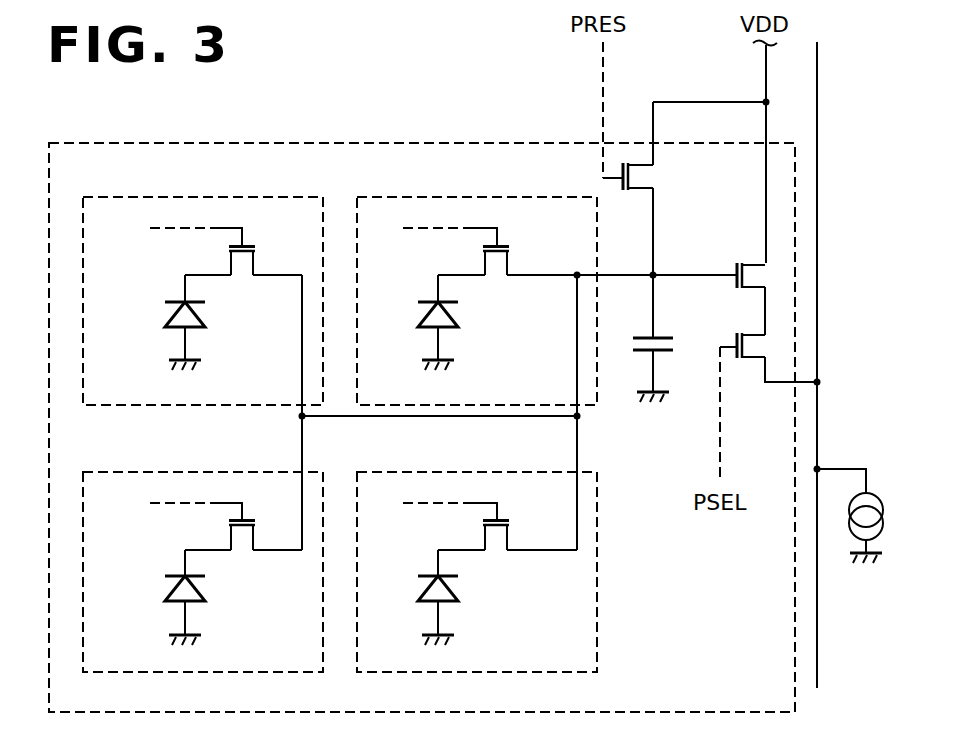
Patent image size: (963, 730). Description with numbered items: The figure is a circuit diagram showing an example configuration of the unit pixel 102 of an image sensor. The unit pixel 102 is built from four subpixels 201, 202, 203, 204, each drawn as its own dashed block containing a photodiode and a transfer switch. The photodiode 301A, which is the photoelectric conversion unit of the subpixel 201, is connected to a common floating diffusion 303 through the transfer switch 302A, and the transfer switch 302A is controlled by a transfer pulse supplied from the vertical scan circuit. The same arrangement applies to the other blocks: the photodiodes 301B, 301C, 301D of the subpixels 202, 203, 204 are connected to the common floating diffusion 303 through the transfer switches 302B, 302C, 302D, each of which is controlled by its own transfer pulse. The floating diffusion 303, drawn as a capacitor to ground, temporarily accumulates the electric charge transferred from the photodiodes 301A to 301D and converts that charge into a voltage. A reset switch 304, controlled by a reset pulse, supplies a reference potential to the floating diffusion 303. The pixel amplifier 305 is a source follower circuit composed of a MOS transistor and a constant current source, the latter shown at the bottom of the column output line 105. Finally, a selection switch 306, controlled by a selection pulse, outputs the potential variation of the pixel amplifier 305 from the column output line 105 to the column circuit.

The unit pixel 102 is at (400, 138).
The column output line 105 is at (817, 171).
The subpixel 201 is at (258, 193).
The subpixel 202 is at (208, 468).
The subpixel 203 is at (508, 193).
The subpixel 204 is at (460, 468).
The photodiode 301A is at (178, 300).
The photodiode 301B is at (178, 574).
The photodiode 301C is at (433, 300).
The photodiode 301D is at (433, 574).
The transfer switch 302A is at (242, 273).
The transfer switch 302B is at (242, 548).
The transfer switch 302C is at (495, 273).
The transfer switch 302D is at (495, 548).
The floating diffusion 303 is at (645, 337).
The reset switch 304 is at (643, 176).
The pixel amplifier 305 is at (747, 262).
The selection switch 306 is at (747, 335).